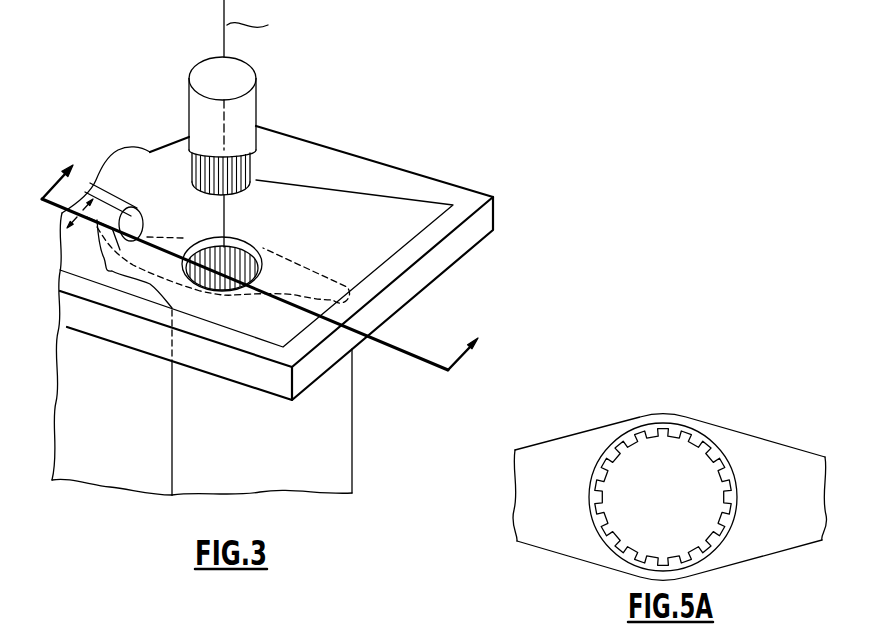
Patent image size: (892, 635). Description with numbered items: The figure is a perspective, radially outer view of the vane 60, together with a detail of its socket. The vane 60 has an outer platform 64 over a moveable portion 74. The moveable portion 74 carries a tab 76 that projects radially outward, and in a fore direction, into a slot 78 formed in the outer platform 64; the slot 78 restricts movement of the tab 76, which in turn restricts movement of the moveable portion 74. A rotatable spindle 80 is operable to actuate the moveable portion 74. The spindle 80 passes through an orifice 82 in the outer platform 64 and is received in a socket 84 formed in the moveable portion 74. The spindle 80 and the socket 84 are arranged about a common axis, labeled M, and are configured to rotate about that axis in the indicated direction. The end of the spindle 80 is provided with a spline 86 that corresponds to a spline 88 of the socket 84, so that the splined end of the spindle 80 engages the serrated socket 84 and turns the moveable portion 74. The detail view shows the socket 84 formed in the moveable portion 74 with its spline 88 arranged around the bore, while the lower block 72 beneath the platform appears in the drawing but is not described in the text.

In FIG. 3, the vane 60 is at (302, 262).
In FIG. 3, the outer platform 64 is at (480, 222).
In FIG. 3, the mount block 72 is at (105, 463).
In FIG. 3, the moveable portion 74 is at (328, 449).
In FIG. 5A, the moveable portion 74 is at (789, 508).
In FIG. 3, the tab 76 is at (147, 222).
In FIG. 3, the slot 78 is at (113, 160).
In FIG. 3, the rotatable spindle 80 is at (247, 126).
In FIG. 3, the orifice 82 is at (239, 246).
In FIG. 3, the socket 84 is at (244, 264).
In FIG. 5A, the socket 84 is at (621, 508).
In FIG. 3, the spline 86 is at (252, 171).
In FIG. 5A, the spline 88 is at (690, 447).